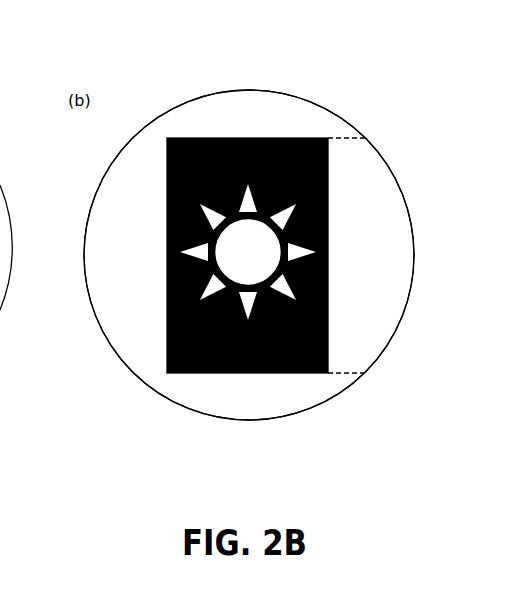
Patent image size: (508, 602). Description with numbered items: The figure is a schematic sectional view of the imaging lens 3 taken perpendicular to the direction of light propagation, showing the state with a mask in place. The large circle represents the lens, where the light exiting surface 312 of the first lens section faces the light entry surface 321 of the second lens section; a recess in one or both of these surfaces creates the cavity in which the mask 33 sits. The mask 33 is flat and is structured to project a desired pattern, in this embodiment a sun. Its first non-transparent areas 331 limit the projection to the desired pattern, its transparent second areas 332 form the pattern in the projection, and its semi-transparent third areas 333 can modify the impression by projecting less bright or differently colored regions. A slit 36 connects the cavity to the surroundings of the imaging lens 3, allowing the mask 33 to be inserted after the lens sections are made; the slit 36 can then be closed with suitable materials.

The imaging lens 3 is at (106, 346).
The mask 33 is at (189, 255).
The slit 36 is at (343, 374).
The light exiting surface 312 is at (249, 225).
The light entry surface 321 is at (247, 118).
The first non-transparent areas 331 is at (303, 177).
The transparent second areas 332 is at (266, 261).
The semi-transparent third areas 333 is at (288, 297).